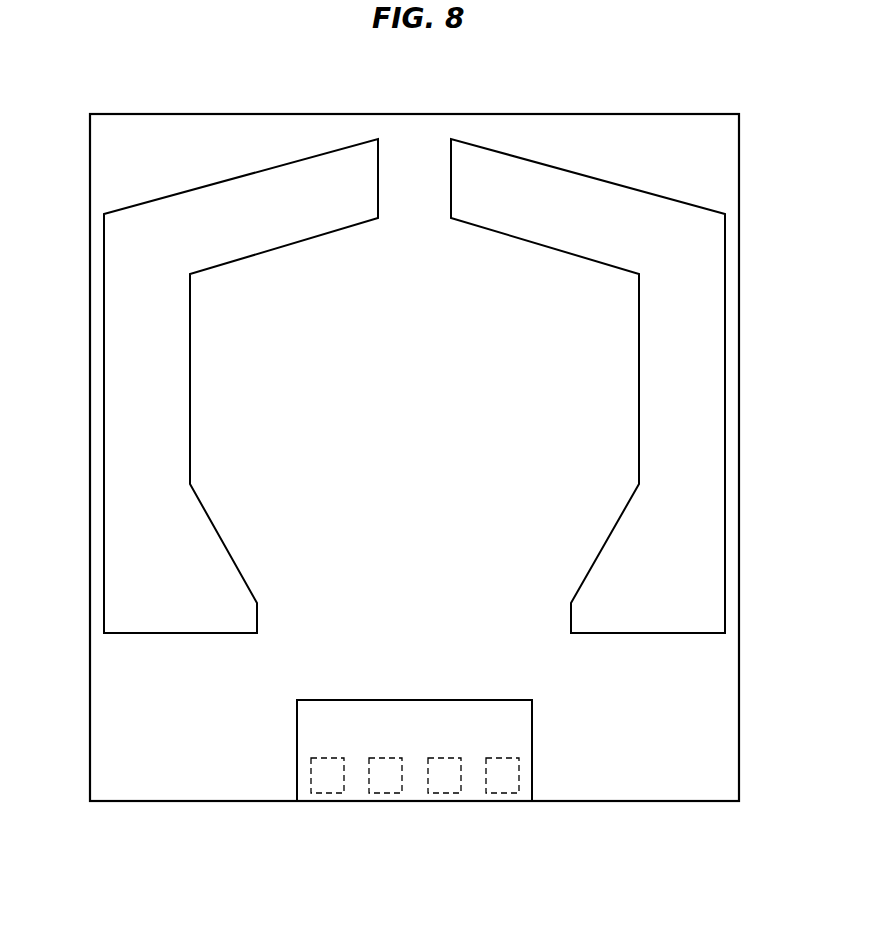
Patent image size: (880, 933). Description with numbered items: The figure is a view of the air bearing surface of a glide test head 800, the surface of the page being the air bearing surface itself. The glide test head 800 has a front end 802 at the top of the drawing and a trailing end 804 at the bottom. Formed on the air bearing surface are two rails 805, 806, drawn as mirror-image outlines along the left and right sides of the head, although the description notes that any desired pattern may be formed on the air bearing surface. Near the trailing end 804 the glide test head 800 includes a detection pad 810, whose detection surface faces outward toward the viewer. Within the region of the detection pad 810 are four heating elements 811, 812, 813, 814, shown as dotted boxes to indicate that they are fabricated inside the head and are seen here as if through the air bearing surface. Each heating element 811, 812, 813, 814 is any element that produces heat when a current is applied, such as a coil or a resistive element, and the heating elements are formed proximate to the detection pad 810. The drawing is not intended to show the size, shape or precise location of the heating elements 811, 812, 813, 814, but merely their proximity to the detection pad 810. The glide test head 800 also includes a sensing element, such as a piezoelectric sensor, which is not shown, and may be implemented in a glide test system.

The glide test head 800 is at (556, 76).
The front end 802 is at (201, 104).
The trailing end 804 is at (593, 811).
The rail 805 is at (117, 343).
The rail 806 is at (708, 343).
The detection pad 810 is at (412, 790).
The heating element 811 is at (332, 760).
The heating element 812 is at (390, 760).
The heating element 813 is at (449, 760).
The heating element 814 is at (507, 760).